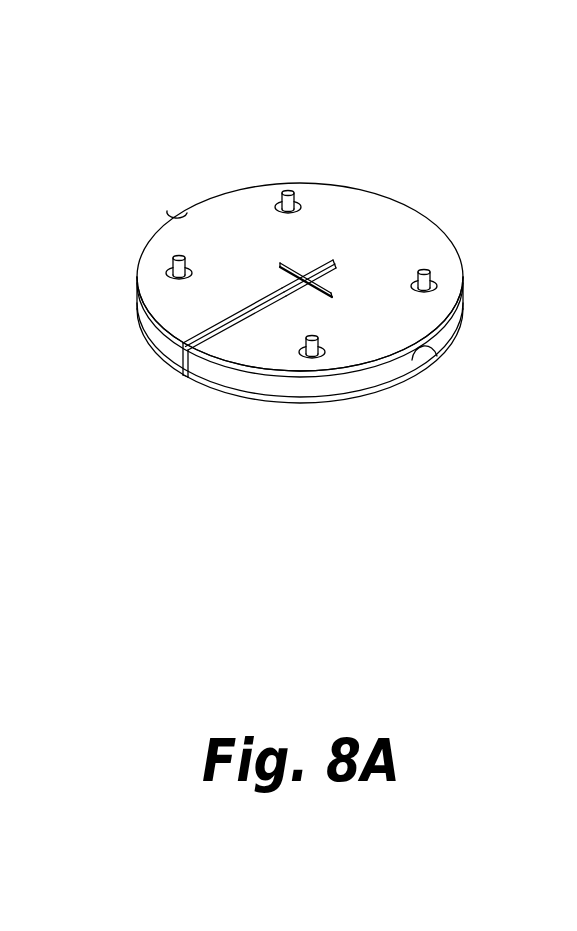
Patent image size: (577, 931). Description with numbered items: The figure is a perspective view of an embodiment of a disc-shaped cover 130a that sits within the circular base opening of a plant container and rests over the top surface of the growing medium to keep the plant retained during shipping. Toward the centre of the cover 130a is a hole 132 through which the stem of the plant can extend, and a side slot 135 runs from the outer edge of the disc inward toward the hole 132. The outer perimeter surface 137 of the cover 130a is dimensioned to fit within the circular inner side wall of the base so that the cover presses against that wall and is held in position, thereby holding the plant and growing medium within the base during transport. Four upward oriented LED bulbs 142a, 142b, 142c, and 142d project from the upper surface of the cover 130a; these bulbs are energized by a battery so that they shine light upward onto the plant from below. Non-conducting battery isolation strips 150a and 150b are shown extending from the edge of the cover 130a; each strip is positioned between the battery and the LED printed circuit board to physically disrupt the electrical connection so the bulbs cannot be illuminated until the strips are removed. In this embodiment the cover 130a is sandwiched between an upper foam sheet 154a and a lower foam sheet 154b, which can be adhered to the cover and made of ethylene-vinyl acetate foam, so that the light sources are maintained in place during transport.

The cover 130a is at (297, 284).
The hole 132 is at (273, 264).
The side slot 135 is at (242, 322).
The outer perimeter surface 137 is at (447, 338).
The LED bulb 142a is at (171, 268).
The LED bulb 142b is at (316, 355).
The LED bulb 142c is at (289, 193).
The LED bulb 142d is at (433, 281).
The battery isolation strip 150a is at (177, 213).
The battery isolation strip 150b is at (432, 360).
The upper foam sheet 154a is at (393, 226).
The lower foam sheet 154b is at (375, 395).